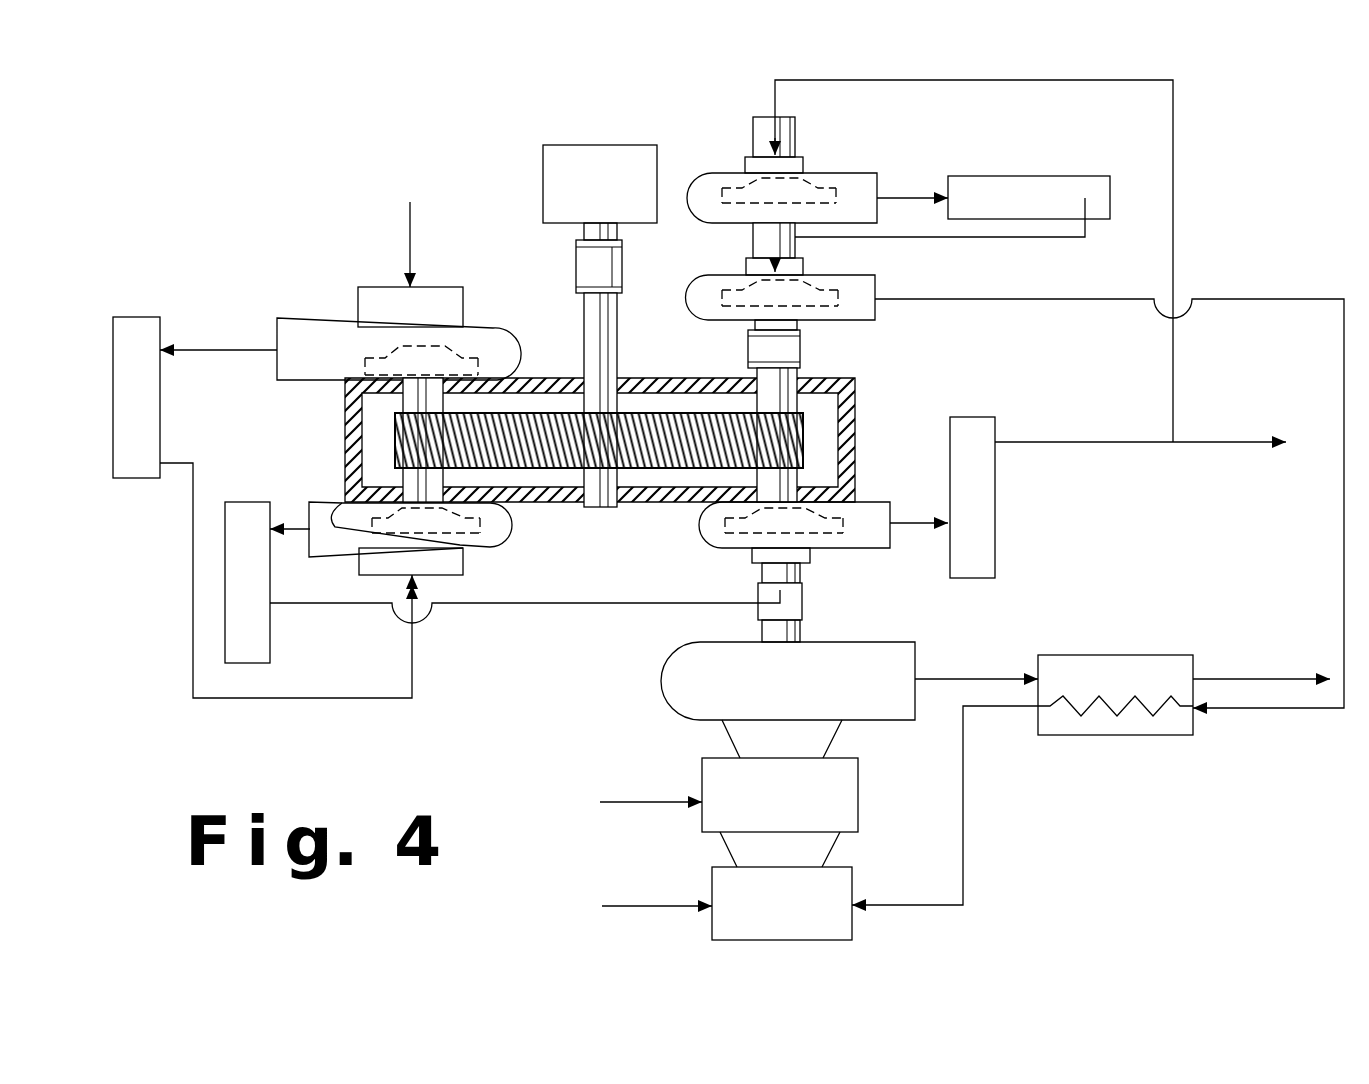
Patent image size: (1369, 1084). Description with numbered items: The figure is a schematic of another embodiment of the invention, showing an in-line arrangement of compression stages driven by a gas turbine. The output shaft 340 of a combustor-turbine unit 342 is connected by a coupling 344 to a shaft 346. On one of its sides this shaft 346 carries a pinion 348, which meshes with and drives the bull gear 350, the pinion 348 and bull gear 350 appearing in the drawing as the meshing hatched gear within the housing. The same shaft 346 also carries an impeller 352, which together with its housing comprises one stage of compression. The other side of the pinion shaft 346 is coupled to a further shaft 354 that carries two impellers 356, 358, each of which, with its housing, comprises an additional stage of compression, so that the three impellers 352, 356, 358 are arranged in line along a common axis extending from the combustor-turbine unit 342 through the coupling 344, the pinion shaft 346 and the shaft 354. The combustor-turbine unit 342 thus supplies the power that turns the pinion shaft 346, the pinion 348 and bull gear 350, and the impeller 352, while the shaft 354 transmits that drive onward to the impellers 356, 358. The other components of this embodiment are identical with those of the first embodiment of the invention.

The output shaft 340 is at (800, 630).
The combustor-turbine unit 342 is at (652, 722).
The coupling 344 is at (790, 597).
The shaft 346 is at (813, 378).
The pinion 348 is at (805, 424).
The bull gear 350 is at (648, 467).
The impeller 352 is at (843, 528).
The shaft 354 is at (745, 240).
The impeller 356 is at (808, 297).
The impeller 358 is at (818, 185).